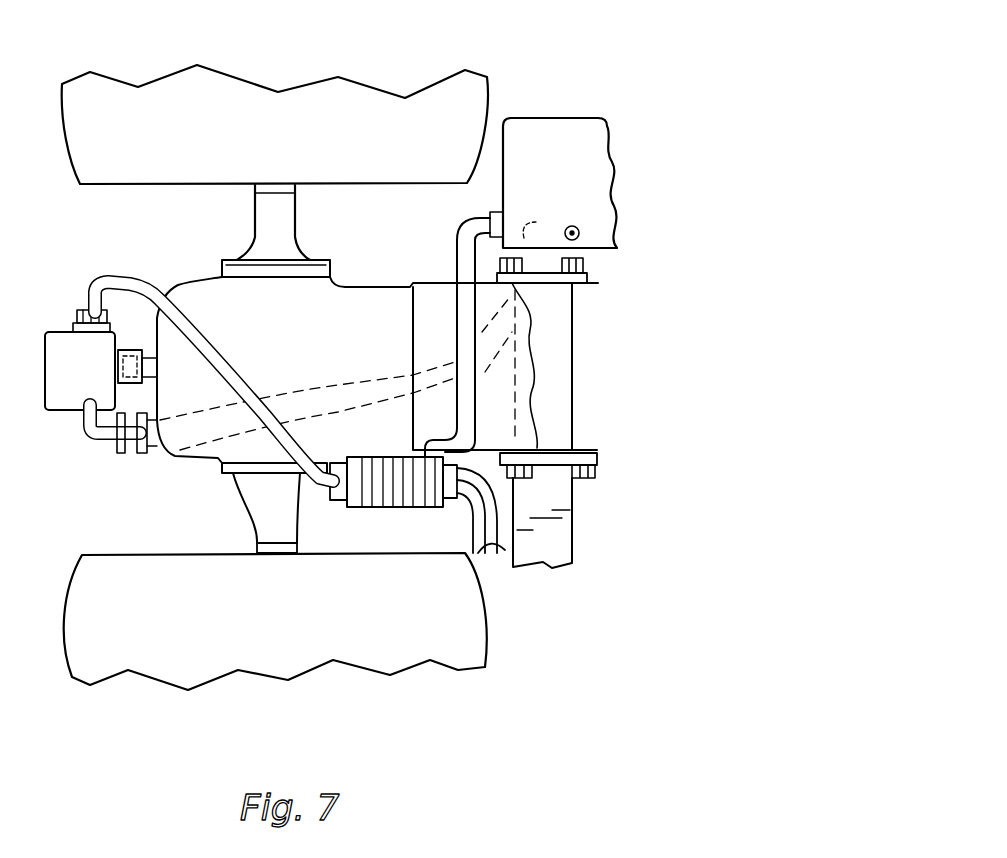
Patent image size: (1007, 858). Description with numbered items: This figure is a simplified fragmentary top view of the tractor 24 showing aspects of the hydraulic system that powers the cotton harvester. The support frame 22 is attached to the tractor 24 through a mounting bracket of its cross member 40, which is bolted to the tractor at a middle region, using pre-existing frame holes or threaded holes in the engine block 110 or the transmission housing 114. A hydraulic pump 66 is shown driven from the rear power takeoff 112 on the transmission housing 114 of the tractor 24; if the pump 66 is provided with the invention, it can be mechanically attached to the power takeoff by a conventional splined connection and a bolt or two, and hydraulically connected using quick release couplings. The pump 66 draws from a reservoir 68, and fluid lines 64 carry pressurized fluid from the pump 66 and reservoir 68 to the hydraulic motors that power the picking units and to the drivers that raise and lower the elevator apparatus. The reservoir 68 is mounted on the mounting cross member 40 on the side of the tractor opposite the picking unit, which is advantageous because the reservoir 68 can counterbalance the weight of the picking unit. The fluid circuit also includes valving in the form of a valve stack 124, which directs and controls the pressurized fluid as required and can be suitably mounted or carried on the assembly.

The support frame 22 is at (621, 523).
The tractor 24 is at (593, 145).
The cross member 40 is at (573, 535).
The fluid line 64 is at (117, 277).
The pump 66 is at (68, 410).
The reservoir 68 is at (603, 98).
The engine block 110 is at (535, 378).
The rear power takeoff 112 is at (172, 368).
The transmission housing 114 is at (205, 458).
The valve stack 124 is at (353, 510).